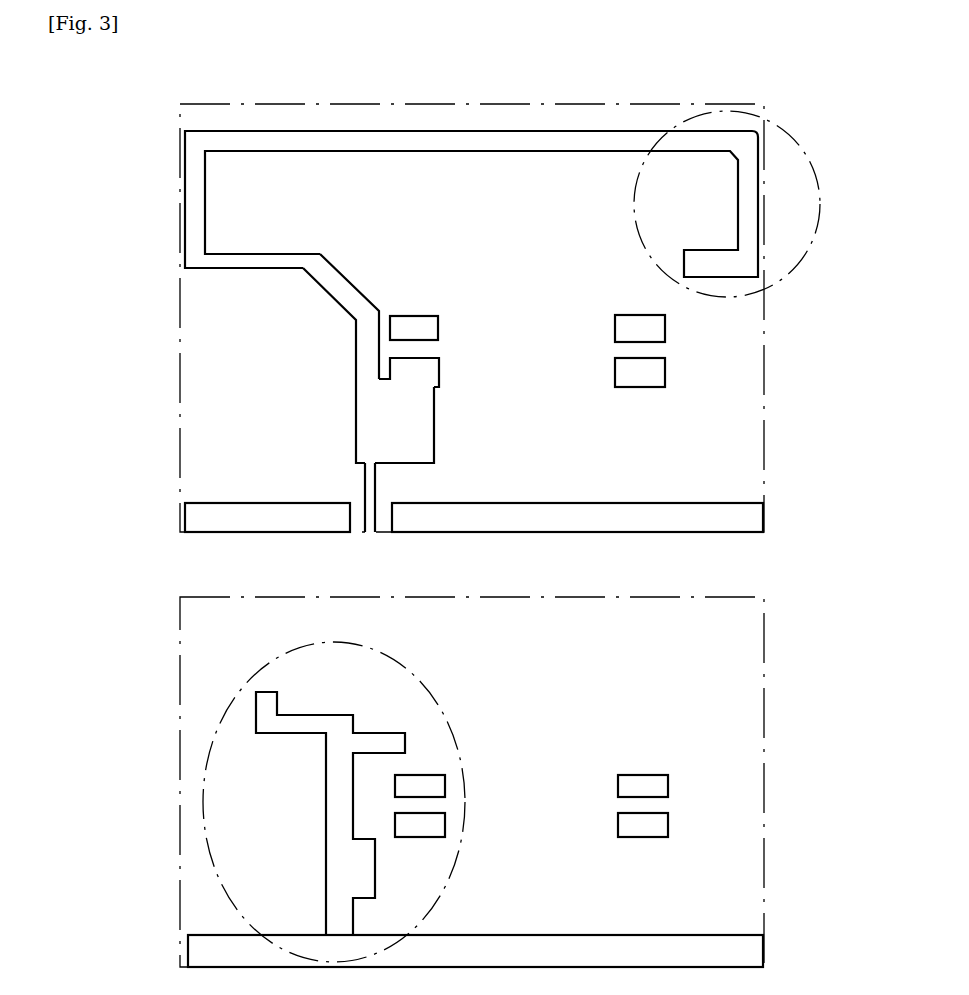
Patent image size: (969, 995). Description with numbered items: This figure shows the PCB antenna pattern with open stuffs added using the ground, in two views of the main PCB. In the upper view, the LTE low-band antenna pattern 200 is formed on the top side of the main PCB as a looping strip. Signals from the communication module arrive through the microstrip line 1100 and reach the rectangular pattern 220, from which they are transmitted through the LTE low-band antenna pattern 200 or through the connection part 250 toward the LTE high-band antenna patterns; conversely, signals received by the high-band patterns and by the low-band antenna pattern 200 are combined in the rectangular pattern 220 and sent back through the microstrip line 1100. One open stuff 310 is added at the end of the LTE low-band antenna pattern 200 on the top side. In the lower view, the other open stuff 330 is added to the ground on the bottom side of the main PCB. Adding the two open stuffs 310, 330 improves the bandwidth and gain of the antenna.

The LTE low-band antenna pattern 200 is at (190, 263).
The rectangular pattern 220 is at (357, 420).
The connection part 250 is at (437, 370).
The microstrip line 1100 is at (370, 492).
The open stuff 310 is at (797, 142).
The open stuff 330 is at (203, 800).